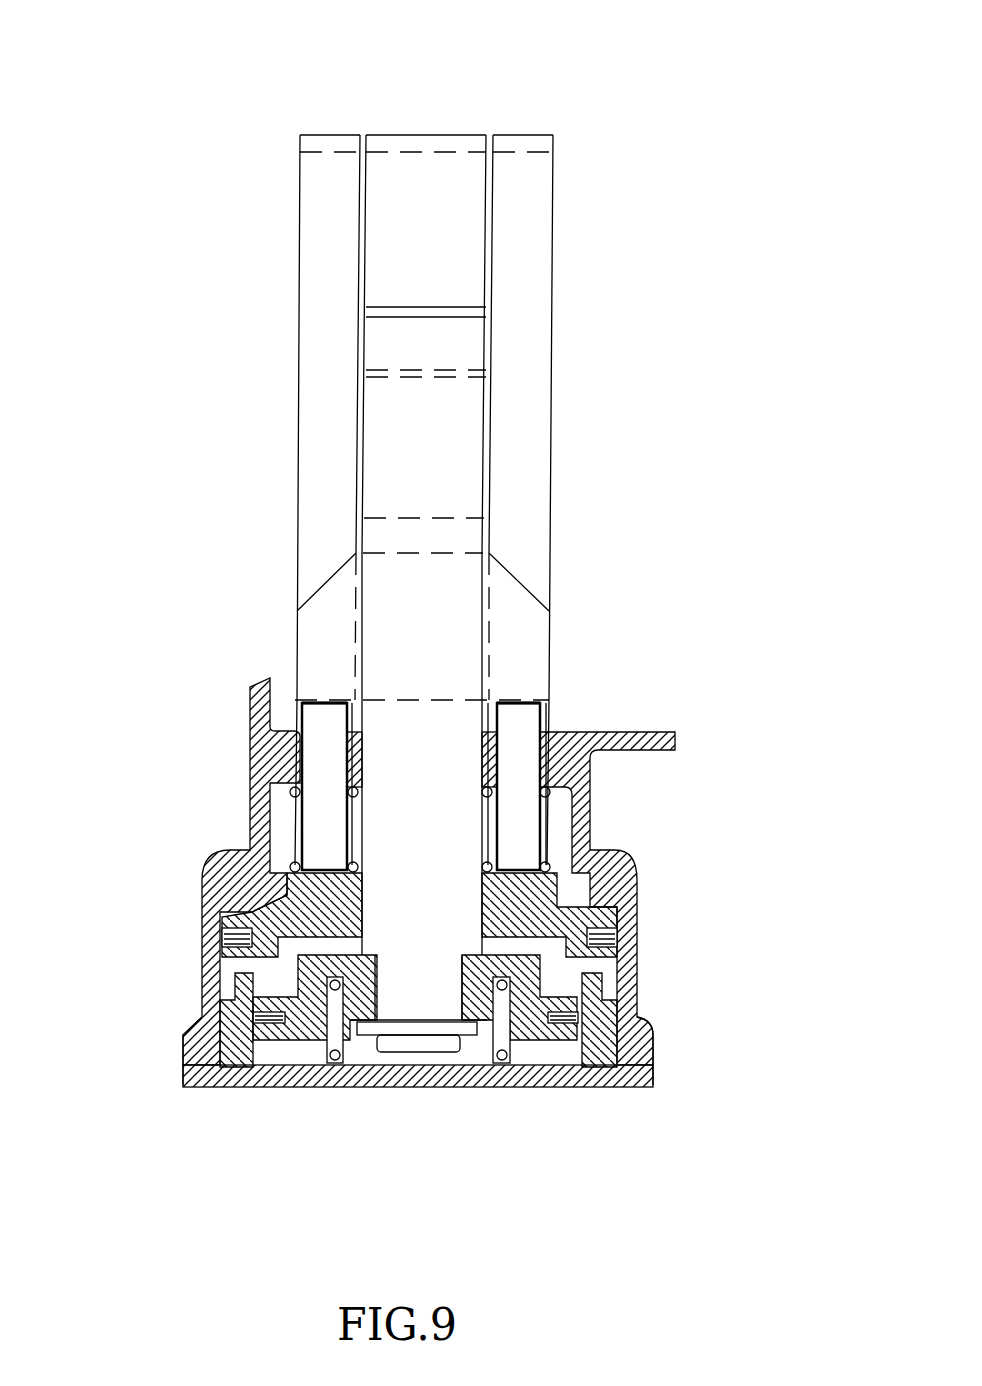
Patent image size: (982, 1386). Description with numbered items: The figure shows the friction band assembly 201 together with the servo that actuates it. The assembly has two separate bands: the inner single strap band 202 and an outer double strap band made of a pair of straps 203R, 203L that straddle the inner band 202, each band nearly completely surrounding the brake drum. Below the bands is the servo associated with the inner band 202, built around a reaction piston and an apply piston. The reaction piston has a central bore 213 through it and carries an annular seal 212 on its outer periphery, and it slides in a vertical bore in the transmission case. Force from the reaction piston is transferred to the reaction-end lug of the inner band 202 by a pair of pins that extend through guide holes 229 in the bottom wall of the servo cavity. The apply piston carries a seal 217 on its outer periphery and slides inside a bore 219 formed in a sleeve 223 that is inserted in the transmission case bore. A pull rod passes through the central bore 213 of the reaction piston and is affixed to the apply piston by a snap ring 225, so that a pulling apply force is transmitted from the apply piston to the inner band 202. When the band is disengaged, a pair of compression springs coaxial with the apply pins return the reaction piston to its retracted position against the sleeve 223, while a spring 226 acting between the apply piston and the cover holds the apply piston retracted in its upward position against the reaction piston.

The friction band assembly 201 is at (570, 113).
The inner single strap band 202 is at (395, 168).
The right strap of outer band 203R is at (335, 210).
The left strap of outer band 203L is at (525, 210).
The guide holes 229 is at (333, 705).
The central bore 213 is at (470, 905).
The annular seal 212 is at (637, 931).
The seal 217 is at (637, 1017).
The sleeve 223 is at (593, 1051).
The bore 219 is at (543, 1067).
The snap ring 225 is at (472, 1028).
The spring 226 is at (335, 1038).